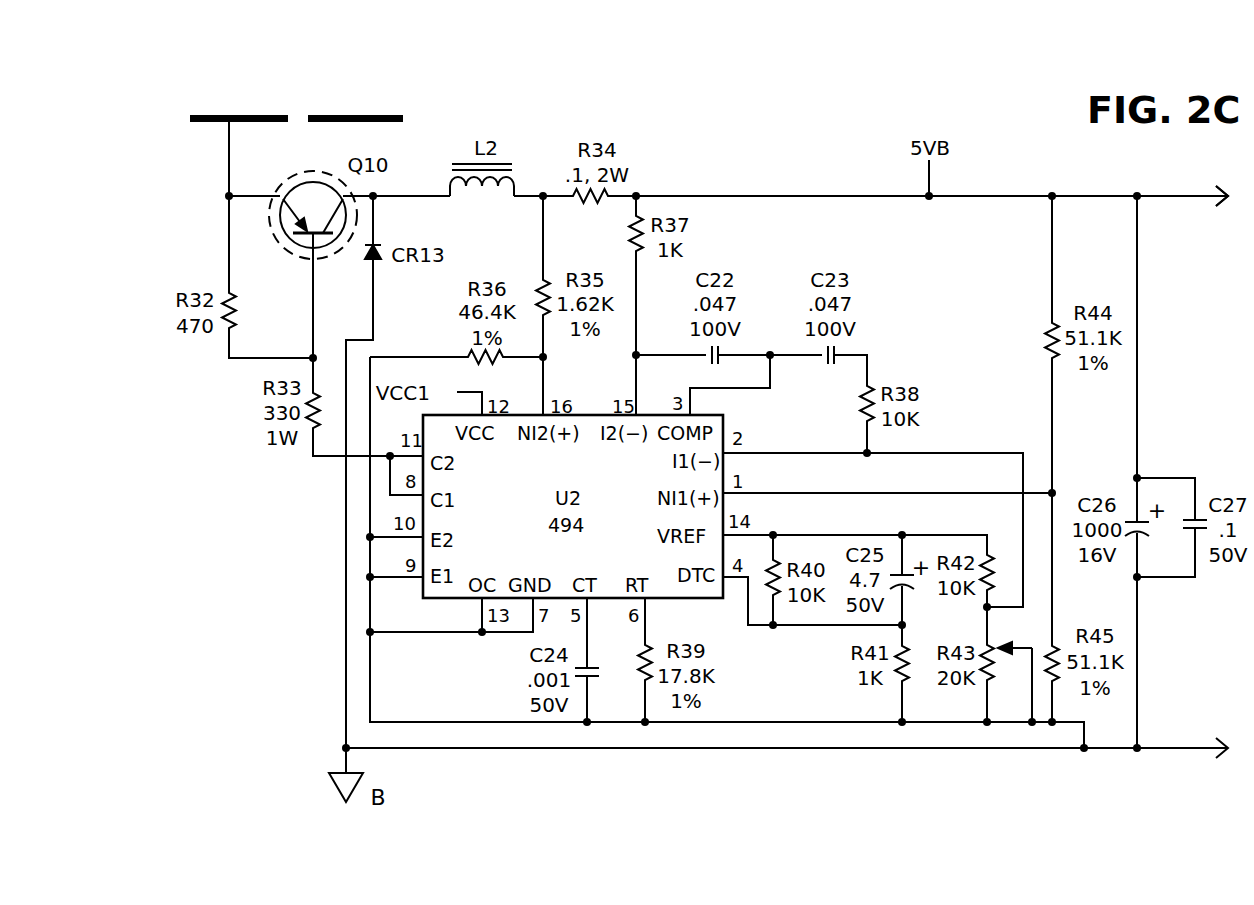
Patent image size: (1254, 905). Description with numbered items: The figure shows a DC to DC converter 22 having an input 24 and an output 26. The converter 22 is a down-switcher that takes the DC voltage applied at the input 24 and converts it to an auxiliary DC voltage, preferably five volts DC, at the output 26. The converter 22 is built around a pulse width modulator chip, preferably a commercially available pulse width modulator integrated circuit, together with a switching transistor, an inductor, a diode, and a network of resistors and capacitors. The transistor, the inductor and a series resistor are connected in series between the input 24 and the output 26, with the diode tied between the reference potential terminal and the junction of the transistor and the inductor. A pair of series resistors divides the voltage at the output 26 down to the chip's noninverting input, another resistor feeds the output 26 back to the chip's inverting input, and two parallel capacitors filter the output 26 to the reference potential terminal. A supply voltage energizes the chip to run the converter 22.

The DC to DC converter 22 is at (273, 753).
The input 24 is at (229, 195).
The output 26 is at (1228, 203).